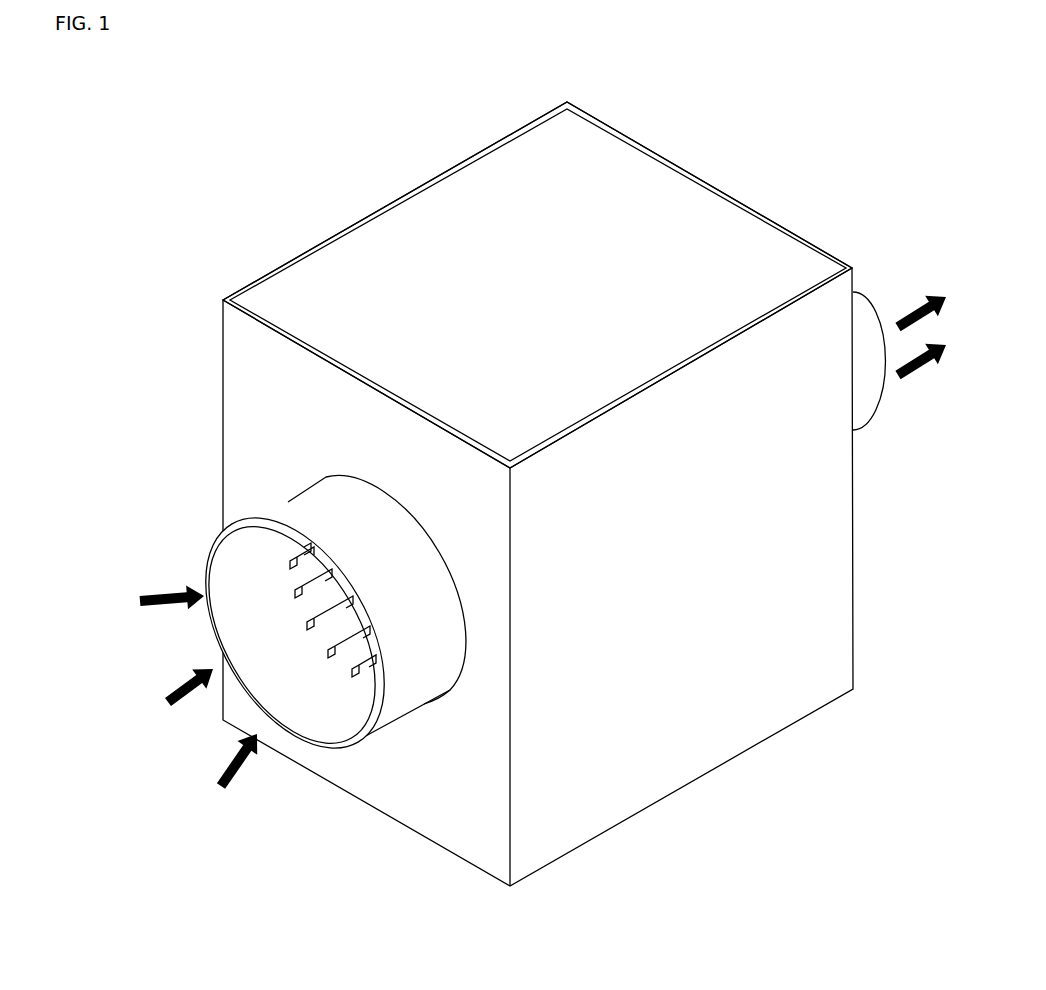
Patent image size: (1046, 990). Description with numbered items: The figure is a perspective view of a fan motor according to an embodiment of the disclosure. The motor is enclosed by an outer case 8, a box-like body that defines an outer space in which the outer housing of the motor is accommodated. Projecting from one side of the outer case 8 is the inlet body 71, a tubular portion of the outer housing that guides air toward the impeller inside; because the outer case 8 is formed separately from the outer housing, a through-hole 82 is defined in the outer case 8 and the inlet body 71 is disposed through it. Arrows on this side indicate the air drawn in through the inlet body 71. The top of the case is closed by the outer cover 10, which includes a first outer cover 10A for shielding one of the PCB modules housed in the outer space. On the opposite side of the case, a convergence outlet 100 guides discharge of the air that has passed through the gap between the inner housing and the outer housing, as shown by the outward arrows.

The outer case 8 is at (713, 740).
The outer cover 10 is at (537, 280).
The first outer cover 10A is at (658, 196).
The inlet body 71 is at (278, 516).
The through-hole 82 is at (450, 692).
The convergence outlet 100 is at (870, 395).